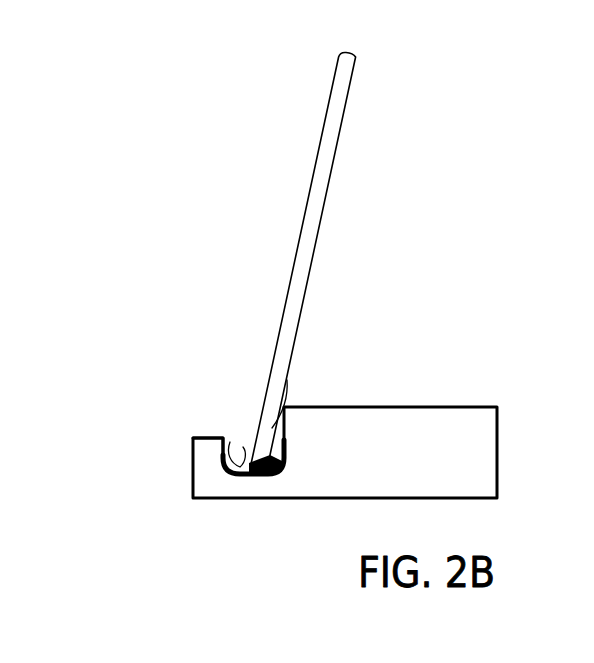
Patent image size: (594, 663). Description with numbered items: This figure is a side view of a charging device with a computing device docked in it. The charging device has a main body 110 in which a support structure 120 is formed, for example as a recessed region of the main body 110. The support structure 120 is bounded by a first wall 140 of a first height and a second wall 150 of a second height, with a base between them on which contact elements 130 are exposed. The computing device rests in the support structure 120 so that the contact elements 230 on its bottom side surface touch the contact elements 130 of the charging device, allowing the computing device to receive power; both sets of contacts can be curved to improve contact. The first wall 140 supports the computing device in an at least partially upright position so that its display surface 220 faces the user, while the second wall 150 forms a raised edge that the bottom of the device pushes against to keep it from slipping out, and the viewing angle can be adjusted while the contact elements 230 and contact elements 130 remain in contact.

The main body 110 is at (420, 457).
The support structure 120 is at (285, 513).
The contact elements 130 is at (230, 442).
The first wall 140 is at (287, 380).
The second wall 150 is at (243, 447).
The display surface 220 is at (313, 180).
The contact elements 230 is at (247, 473).